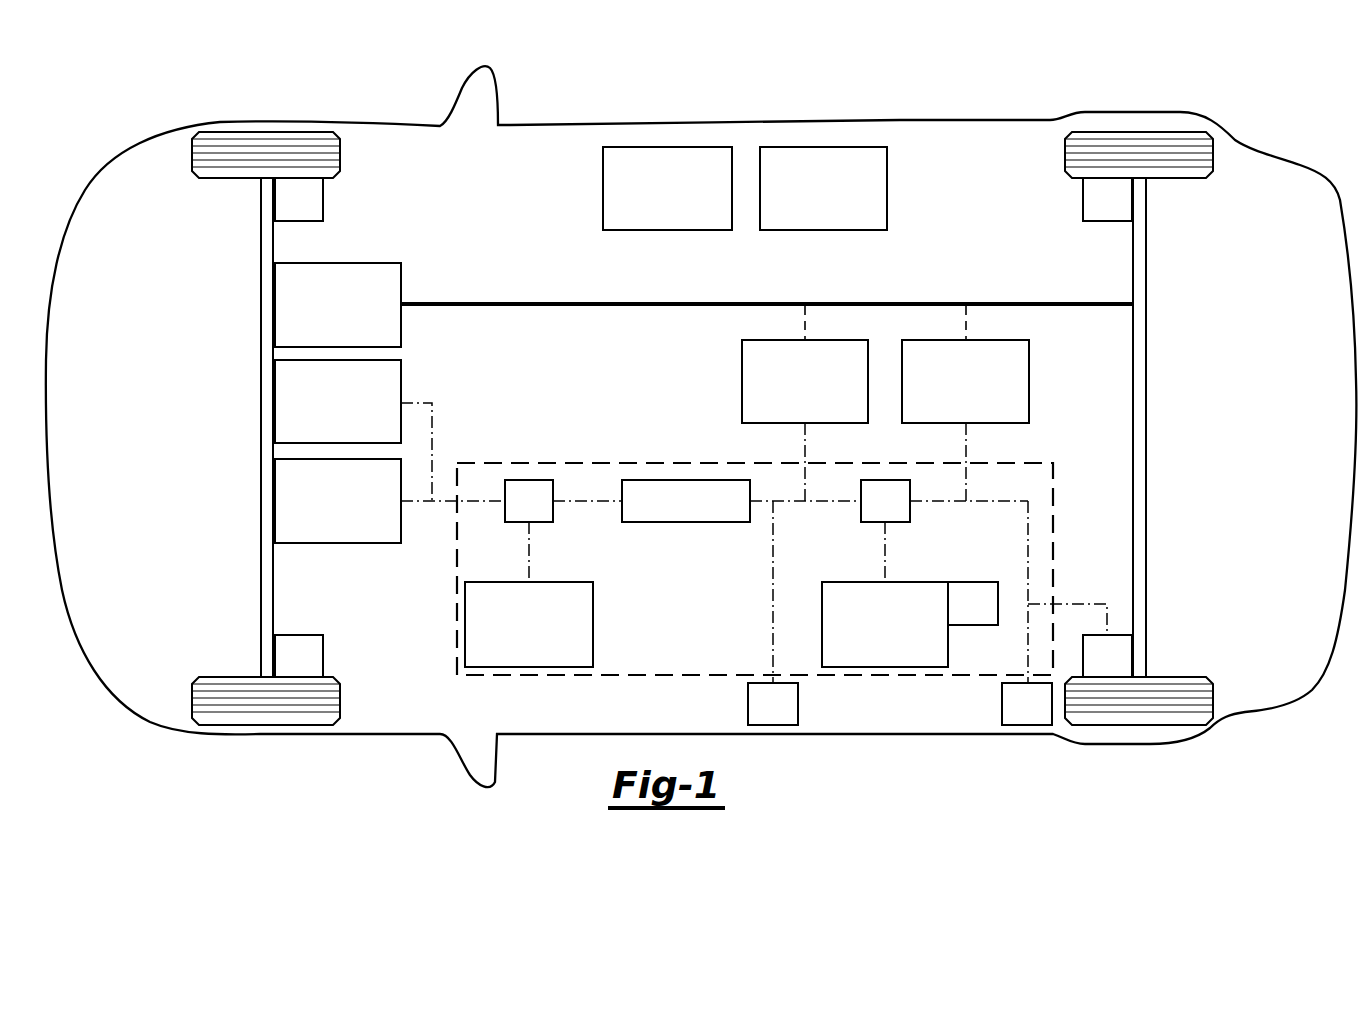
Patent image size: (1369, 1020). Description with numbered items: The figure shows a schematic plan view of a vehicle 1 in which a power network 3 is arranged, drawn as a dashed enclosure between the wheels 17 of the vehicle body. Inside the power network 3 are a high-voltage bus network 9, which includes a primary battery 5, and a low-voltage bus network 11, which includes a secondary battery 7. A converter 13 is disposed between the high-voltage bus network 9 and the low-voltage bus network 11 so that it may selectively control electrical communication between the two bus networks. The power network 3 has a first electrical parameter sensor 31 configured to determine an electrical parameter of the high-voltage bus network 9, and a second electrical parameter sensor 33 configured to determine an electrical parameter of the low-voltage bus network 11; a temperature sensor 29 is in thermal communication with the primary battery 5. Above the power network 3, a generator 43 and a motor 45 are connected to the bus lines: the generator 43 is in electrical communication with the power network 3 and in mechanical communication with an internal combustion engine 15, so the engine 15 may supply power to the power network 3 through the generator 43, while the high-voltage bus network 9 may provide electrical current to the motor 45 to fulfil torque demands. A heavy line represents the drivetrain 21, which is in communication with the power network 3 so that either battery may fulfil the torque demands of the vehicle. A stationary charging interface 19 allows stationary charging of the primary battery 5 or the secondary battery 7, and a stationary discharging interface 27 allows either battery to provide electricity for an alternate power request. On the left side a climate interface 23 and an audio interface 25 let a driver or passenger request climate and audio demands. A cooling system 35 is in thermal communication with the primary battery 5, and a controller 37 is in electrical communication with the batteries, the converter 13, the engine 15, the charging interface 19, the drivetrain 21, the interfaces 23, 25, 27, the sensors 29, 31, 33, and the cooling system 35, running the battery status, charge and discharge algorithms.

The vehicle 1 is at (752, 120).
The power network 3 is at (558, 462).
The primary battery 5 is at (830, 582).
The secondary battery 7 is at (593, 625).
The high-voltage bus network 9 is at (945, 504).
The low-voltage bus network 11 is at (482, 503).
The converter 13 is at (685, 523).
The internal combustion engine 15 is at (401, 284).
The wheels 17 is at (702, 428).
The stationary charging interface 19 is at (773, 704).
The drivetrain 21 is at (752, 301).
The climate interface 23 is at (401, 382).
The audio interface 25 is at (335, 544).
The stationary discharging interface 27 is at (1027, 704).
The temperature sensor 29 is at (973, 603).
The first electrical parameter sensor 31 is at (885, 501).
The second electrical parameter sensor 33 is at (529, 501).
The cooling system 35 is at (887, 190).
The controller 37 is at (603, 187).
The generator 43 is at (742, 381).
The motor 45 is at (1029, 381).